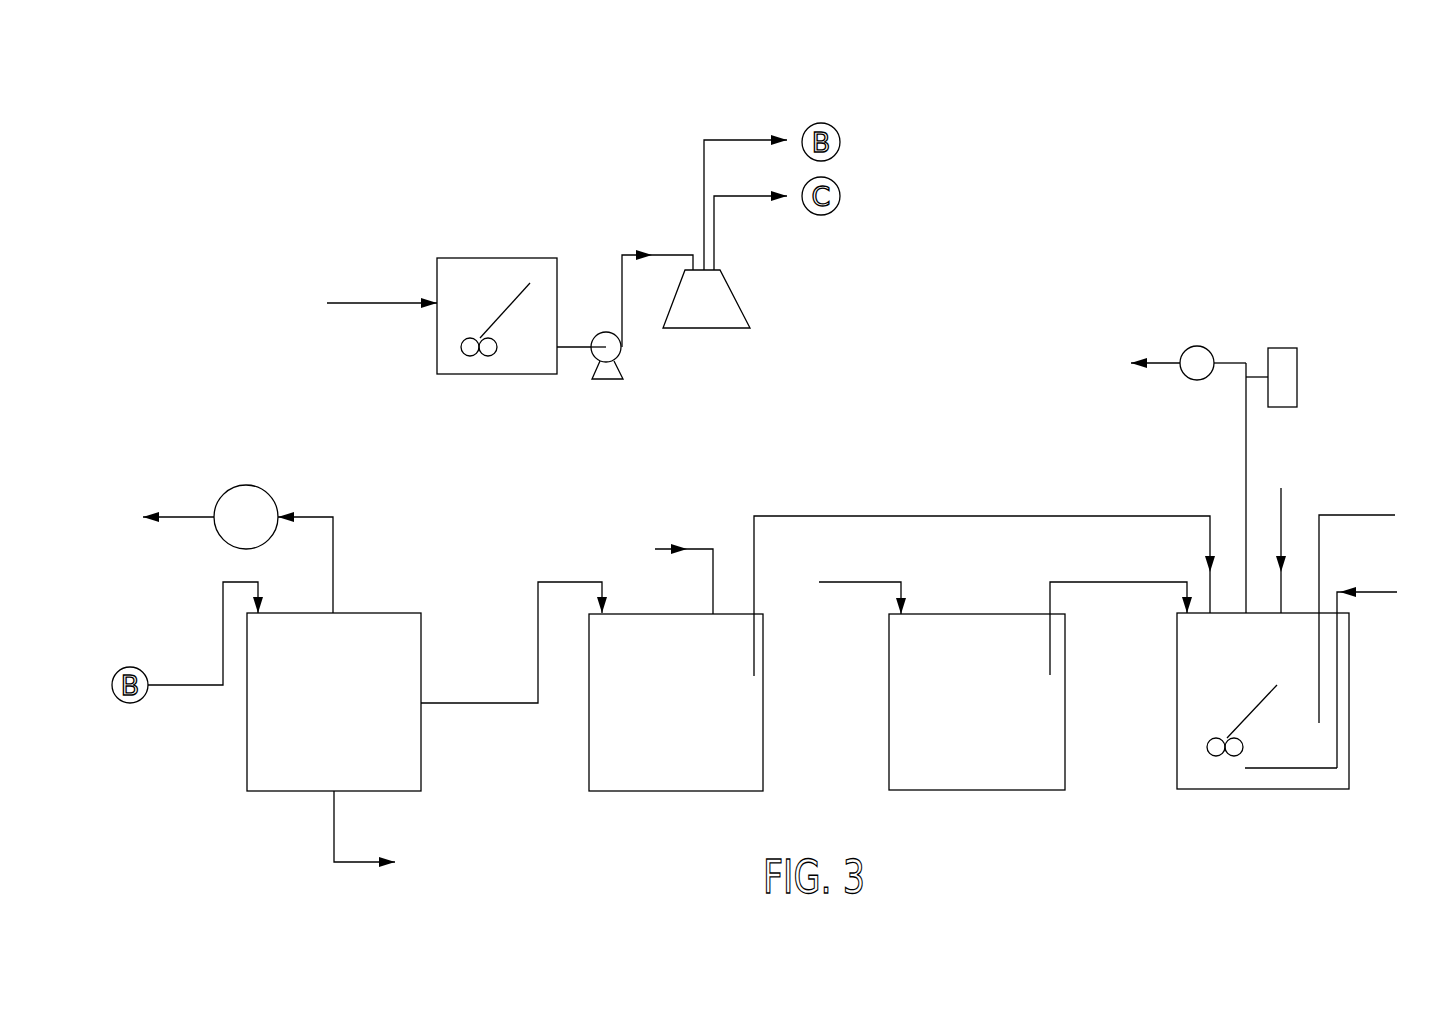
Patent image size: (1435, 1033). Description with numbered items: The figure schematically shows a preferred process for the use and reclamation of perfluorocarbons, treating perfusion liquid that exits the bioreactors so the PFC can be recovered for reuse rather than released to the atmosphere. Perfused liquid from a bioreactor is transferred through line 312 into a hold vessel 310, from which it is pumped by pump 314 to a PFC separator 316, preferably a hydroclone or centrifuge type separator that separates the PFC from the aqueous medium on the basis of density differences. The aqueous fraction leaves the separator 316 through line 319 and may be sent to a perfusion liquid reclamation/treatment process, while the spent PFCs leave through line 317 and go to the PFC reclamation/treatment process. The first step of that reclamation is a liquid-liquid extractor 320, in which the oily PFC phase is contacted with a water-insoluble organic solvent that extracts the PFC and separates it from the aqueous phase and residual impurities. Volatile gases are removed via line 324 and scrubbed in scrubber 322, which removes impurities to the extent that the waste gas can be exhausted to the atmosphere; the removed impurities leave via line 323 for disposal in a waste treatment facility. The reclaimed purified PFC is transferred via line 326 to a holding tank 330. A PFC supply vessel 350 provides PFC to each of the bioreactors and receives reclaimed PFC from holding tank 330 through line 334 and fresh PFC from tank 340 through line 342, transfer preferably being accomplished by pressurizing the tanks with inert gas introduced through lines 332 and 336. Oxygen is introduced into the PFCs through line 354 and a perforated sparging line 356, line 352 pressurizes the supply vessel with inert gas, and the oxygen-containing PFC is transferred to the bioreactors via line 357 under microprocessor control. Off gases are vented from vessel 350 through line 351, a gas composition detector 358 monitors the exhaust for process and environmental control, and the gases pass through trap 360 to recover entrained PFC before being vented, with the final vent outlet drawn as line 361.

The hold vessel 310 is at (497, 374).
The line 312 is at (383, 303).
The pump 314 is at (616, 358).
The PFC separator 316 is at (737, 298).
The line 317 is at (745, 140).
The line 319 is at (732, 196).
The liquid-liquid extractor 320 is at (288, 791).
The scrubber 322 is at (223, 492).
The line 323 is at (334, 825).
The line 324 is at (333, 565).
The line 326 is at (478, 703).
The holding tank 330 is at (678, 791).
The line 332 is at (687, 548).
The line 334 is at (970, 516).
The line 336 is at (870, 580).
The tank 340 is at (980, 790).
The line 342 is at (1118, 582).
The PFC supply vessel 350 is at (1267, 789).
The line 351 is at (1246, 452).
The line 352 is at (1281, 515).
The line 354 is at (1367, 592).
The perforated sparging line 356 is at (1292, 768).
The line 357 is at (1358, 515).
The gas composition detector 358 is at (1282, 348).
The trap 360 is at (1182, 352).
The vent outlet 361 is at (1167, 365).